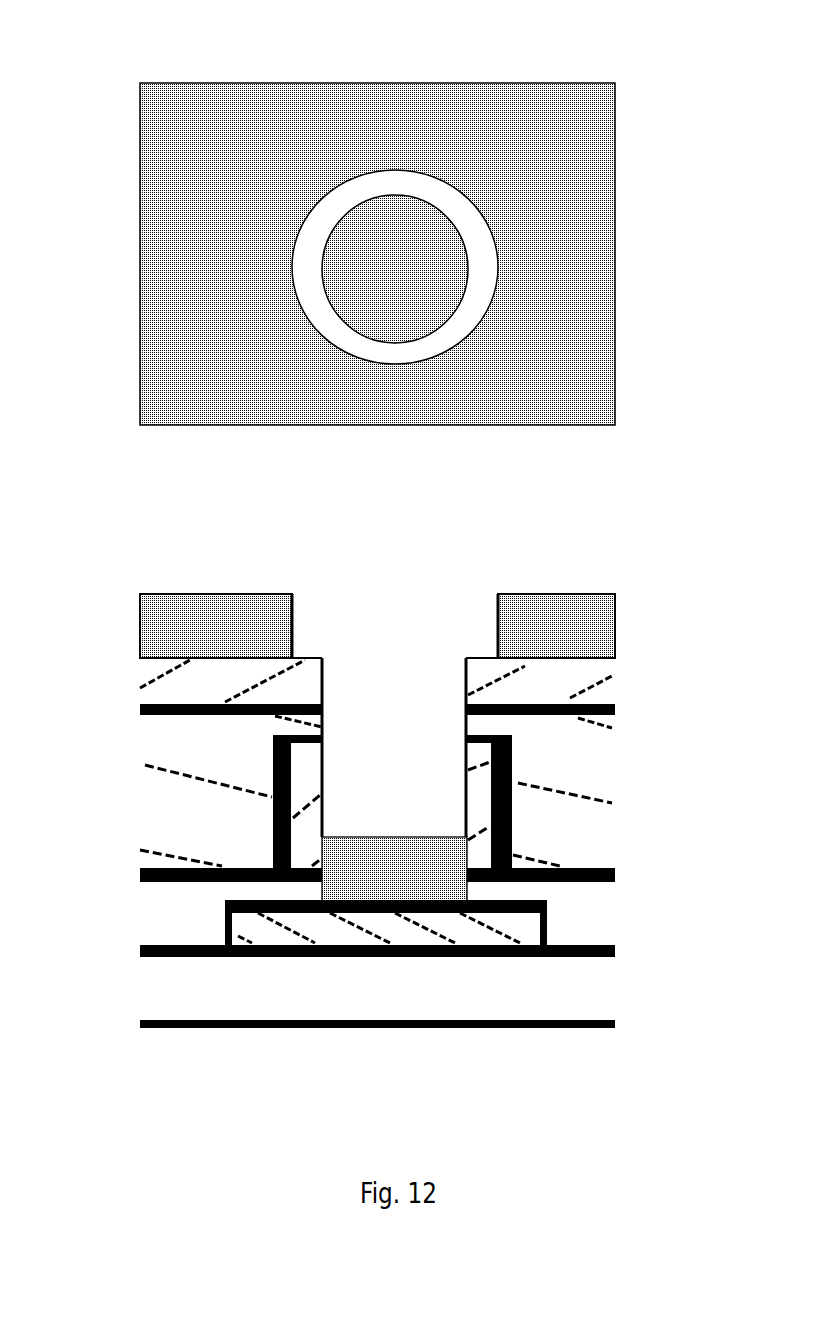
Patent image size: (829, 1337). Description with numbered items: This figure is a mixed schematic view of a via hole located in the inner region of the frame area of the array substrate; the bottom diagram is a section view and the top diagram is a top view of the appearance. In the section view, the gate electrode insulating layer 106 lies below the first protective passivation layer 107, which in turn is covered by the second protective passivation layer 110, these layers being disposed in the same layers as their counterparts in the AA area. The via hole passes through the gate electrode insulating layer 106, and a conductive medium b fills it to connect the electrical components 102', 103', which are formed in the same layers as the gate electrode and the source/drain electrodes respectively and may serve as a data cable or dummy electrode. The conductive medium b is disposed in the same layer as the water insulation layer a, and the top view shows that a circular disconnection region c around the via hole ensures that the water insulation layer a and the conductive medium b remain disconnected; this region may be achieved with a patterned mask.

The water insulation layer a is at (305, 163).
The conductive medium b is at (385, 277).
The circular disconnection region c is at (388, 182).
The second protective passivation layer 110 is at (578, 680).
The first protective passivation layer 107 is at (578, 756).
The gate electrode insulating layer 106 is at (602, 993).
The component formed in the same layer as the source/drain electrodes 103' is at (281, 801).
The component formed in the same layer as the gate electrode 102' is at (326, 929).